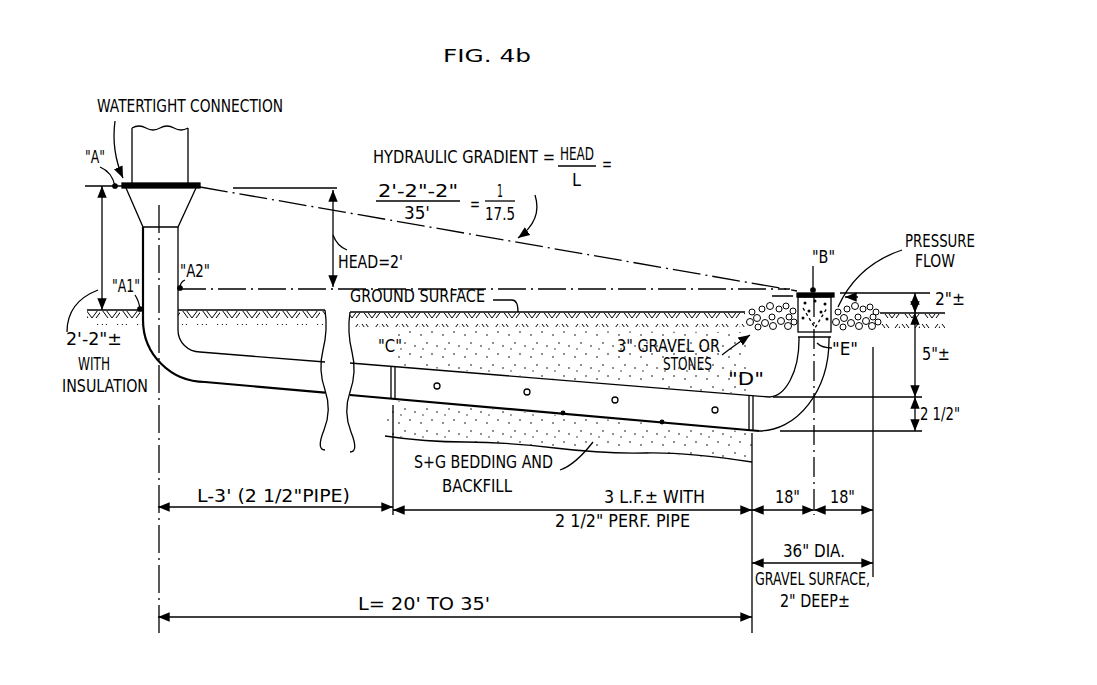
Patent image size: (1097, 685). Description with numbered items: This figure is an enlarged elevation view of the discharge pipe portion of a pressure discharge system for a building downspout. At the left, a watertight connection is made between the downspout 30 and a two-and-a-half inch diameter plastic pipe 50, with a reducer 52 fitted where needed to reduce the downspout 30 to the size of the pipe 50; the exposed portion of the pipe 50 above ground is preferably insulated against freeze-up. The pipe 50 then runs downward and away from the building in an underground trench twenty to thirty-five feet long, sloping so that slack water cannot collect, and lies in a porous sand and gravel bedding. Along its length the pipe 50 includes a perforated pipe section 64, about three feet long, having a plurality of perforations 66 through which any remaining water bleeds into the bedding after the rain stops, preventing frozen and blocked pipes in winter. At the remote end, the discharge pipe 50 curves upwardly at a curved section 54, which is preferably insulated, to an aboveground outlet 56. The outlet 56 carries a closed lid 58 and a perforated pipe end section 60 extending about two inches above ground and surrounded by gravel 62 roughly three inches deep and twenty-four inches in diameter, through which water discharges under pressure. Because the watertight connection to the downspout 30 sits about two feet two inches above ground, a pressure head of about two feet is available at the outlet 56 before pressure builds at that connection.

The downspout 30 is at (188, 147).
The plastic pipe 50 is at (253, 388).
The reducer 52 is at (187, 207).
The curved section 54 is at (808, 386).
The outlet 56 is at (817, 249).
The closed lid 58 is at (807, 292).
The perforated pipe end section 60 is at (832, 307).
The gravel 62 is at (762, 313).
The perforated pipe section 64 is at (488, 387).
The perforations 66 is at (456, 366).